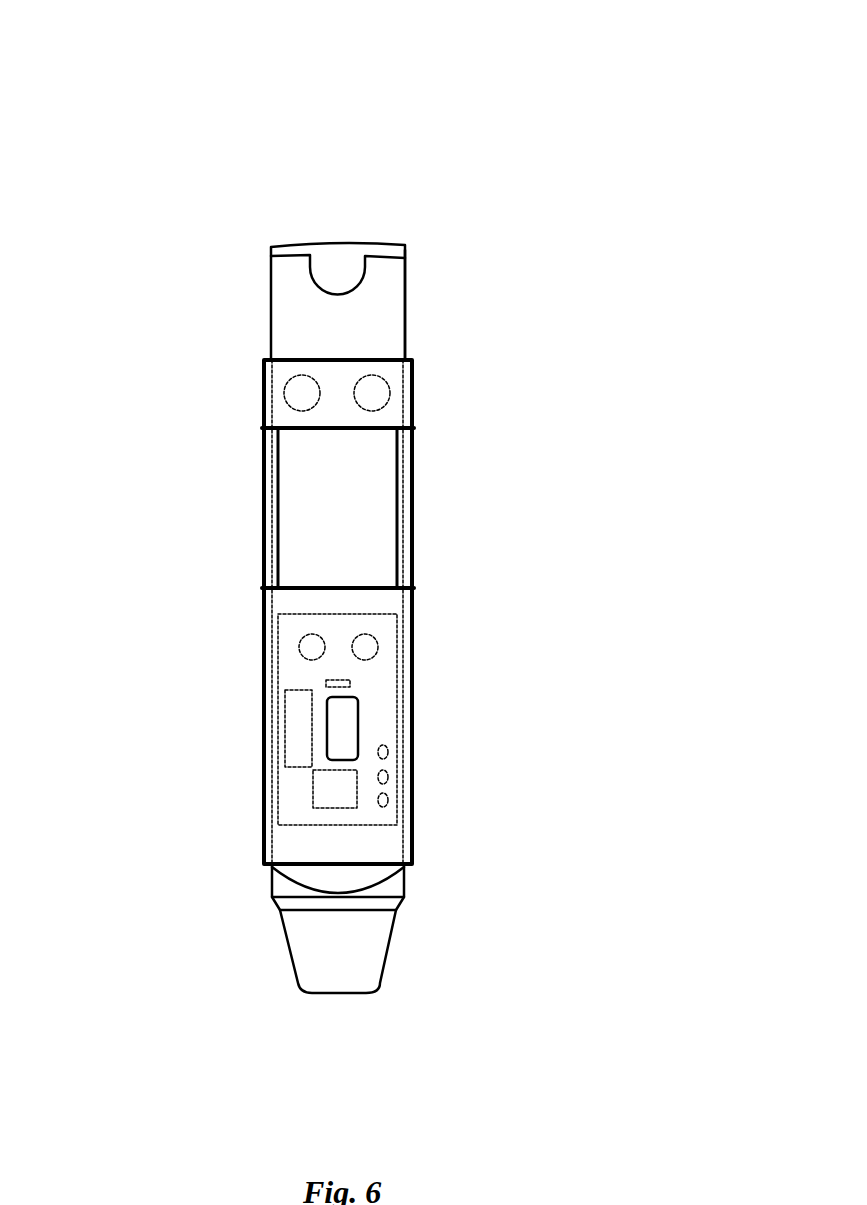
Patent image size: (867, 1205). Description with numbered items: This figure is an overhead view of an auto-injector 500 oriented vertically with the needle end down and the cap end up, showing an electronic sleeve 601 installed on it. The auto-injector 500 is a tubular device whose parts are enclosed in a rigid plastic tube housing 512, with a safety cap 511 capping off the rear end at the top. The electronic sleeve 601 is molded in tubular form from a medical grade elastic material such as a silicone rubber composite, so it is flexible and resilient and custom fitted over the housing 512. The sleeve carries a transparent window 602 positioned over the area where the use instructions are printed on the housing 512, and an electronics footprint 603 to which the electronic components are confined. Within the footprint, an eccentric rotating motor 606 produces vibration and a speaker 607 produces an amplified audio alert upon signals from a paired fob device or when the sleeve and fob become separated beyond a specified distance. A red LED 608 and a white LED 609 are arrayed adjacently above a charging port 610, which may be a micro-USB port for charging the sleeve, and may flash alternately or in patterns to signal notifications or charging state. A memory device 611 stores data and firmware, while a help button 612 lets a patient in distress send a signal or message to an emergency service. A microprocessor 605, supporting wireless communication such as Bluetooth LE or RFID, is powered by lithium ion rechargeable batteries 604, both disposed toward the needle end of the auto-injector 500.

The auto-injector 500 is at (325, 133).
The safety cap 511 is at (338, 243).
The housing 512 is at (405, 340).
The electronic sleeve 601 is at (415, 570).
The transparent window 602 is at (278, 478).
The electronics footprint 603 is at (386, 707).
The Li ion rechargeable batteries 604 is at (388, 800).
The microprocessor 605 is at (313, 792).
The eccentric rotating motor 606 is at (284, 393).
The speaker 607 is at (390, 393).
The red LED 608 is at (299, 647).
The white LED 609 is at (378, 647).
The charging port 610 is at (326, 682).
The memory device 611 is at (287, 735).
The help button 612 is at (360, 733).